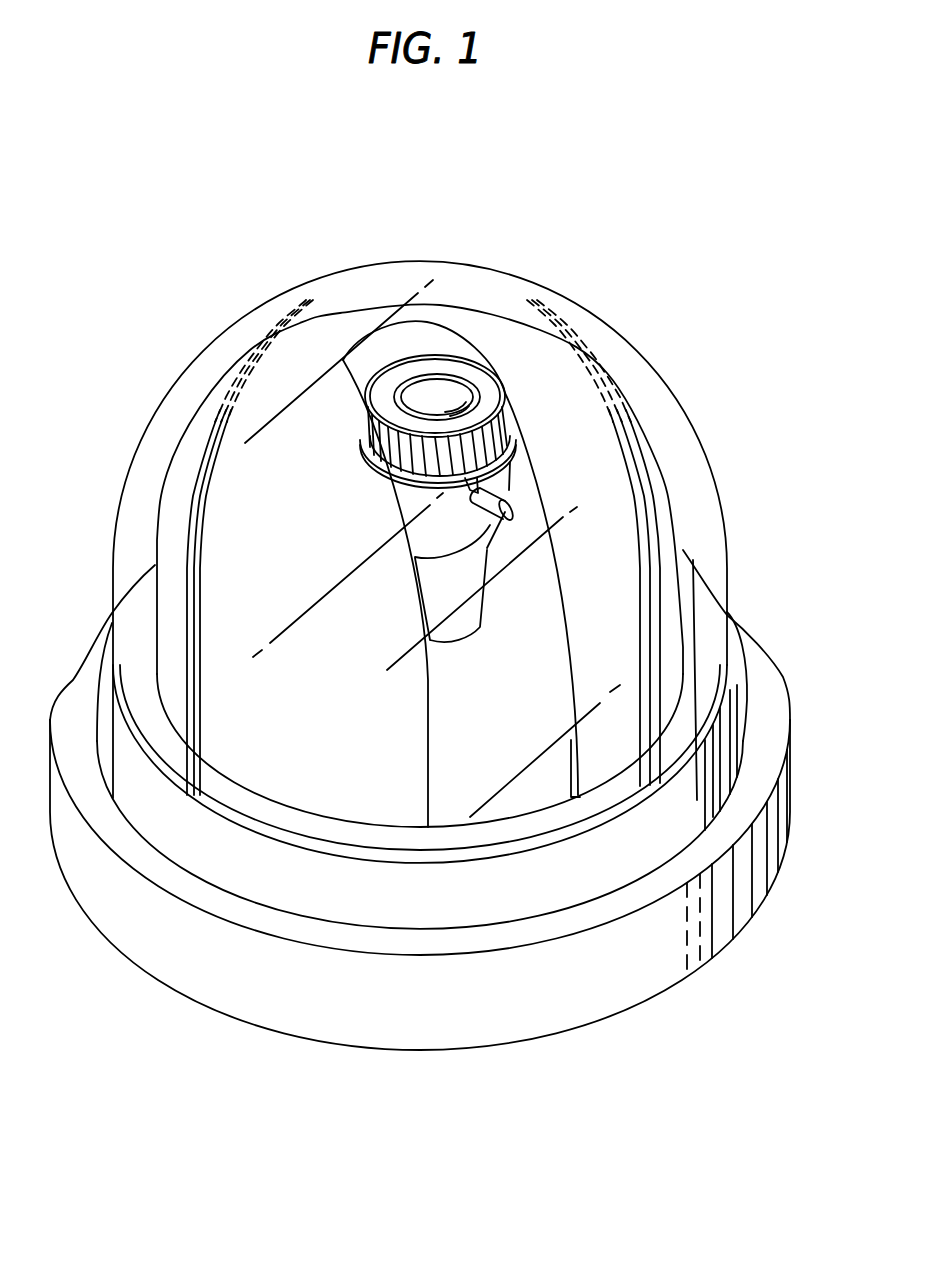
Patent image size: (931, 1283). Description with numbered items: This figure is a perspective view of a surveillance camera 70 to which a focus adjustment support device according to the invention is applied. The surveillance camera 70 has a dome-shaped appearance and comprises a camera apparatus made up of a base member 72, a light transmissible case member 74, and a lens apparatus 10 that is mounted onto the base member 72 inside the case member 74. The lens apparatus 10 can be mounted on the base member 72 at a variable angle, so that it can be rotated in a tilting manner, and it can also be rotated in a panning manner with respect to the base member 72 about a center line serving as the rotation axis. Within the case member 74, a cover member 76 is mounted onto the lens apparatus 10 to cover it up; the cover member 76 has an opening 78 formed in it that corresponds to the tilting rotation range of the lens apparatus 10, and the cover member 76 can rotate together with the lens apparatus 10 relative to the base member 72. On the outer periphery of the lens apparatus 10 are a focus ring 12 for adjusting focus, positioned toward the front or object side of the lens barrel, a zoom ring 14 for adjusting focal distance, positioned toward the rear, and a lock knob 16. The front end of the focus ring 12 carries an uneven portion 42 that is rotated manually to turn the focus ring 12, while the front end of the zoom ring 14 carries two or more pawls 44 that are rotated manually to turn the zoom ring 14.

The lens apparatus 10 is at (427, 341).
The focus ring 12 is at (497, 387).
The zoom ring 14 is at (430, 592).
The lock knob 16 is at (517, 507).
The uneven portion 42 is at (500, 443).
The pawls 44 is at (483, 480).
The surveillance camera 70 is at (378, 231).
The base member 72 is at (625, 987).
The case member 74 is at (290, 291).
The cover member 76 is at (665, 563).
The opening 78 is at (570, 763).